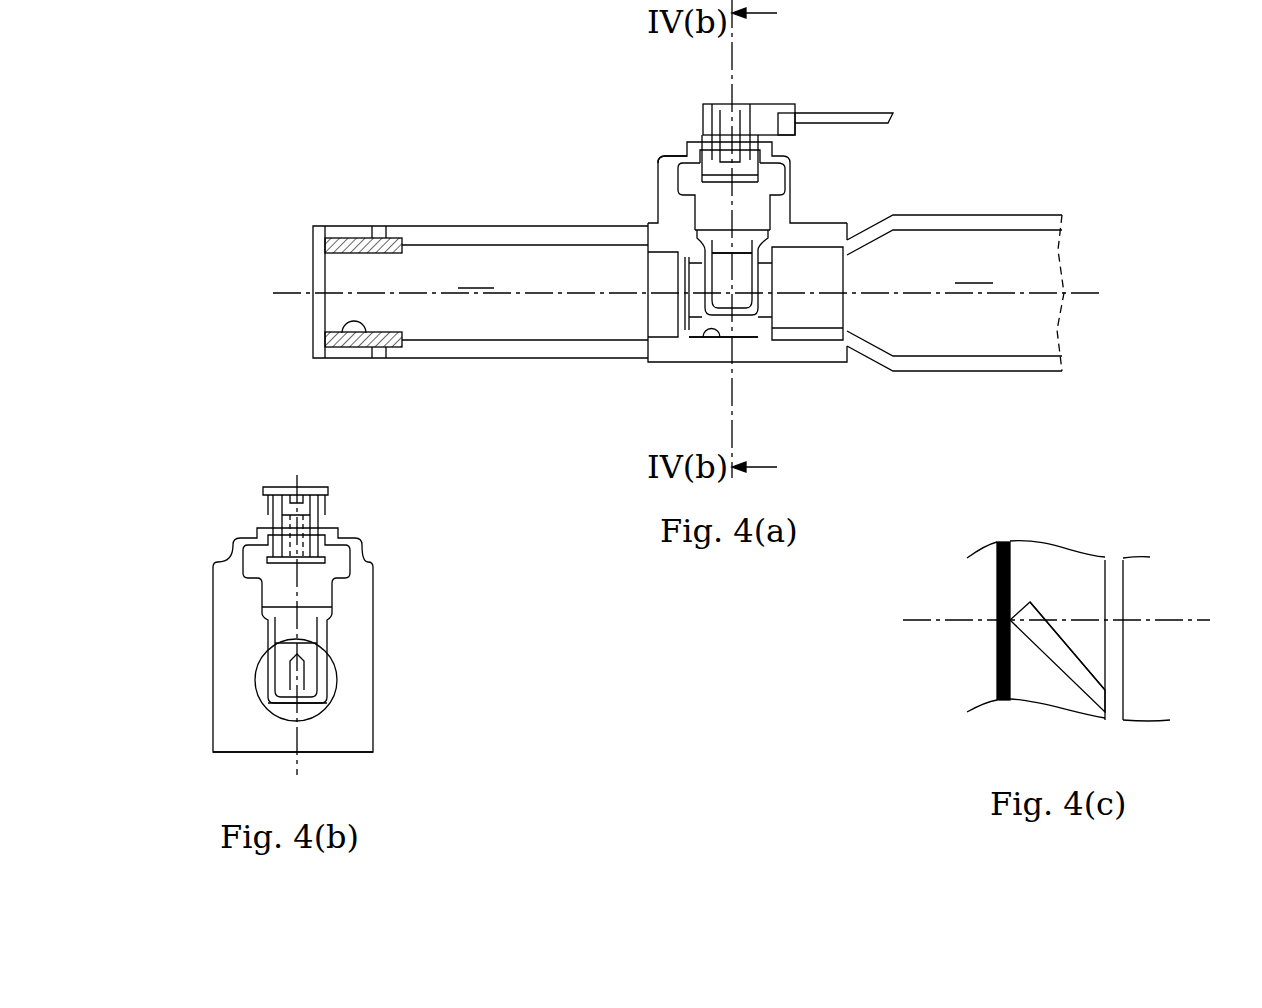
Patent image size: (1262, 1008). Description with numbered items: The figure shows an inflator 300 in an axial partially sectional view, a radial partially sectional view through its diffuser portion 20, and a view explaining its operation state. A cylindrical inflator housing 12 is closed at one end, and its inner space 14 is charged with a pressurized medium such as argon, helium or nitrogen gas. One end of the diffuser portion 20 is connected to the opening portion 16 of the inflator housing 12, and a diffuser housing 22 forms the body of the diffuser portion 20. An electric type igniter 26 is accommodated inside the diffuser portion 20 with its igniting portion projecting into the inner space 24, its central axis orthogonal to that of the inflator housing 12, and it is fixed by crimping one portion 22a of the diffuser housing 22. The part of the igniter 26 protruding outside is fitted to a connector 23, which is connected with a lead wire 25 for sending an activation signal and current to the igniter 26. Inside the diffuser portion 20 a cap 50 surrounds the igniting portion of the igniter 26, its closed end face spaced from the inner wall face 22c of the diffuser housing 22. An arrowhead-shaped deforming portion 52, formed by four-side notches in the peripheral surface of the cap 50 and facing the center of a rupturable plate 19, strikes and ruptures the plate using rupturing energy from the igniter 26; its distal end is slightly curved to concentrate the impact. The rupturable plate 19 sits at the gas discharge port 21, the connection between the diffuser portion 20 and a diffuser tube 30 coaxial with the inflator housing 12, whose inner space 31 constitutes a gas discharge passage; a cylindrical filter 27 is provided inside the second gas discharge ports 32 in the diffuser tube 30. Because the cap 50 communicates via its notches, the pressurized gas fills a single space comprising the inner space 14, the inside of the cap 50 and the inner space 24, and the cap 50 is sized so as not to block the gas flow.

In FIG. 4A, the inflator 300 is at (612, 165).
In FIG. 4A, the diffuser tube 30 is at (498, 226).
In FIG. 4A, the inner space 31 is at (476, 273).
In FIG. 4A, the second gas discharge ports 32 is at (382, 226).
In FIG. 4A, the filter 27 is at (337, 347).
In FIG. 4A, the diffuser portion 20 is at (680, 376).
In FIG. 4B, the diffuser portion 20 is at (392, 667).
In FIG. 4A, the diffuser housing 22 is at (783, 212).
In FIG. 4B, the diffuser housing 22 is at (225, 637).
In FIG. 4A, the crimped portion of diffuser housing 22a is at (673, 158).
In FIG. 4A, the inner wall face 22c is at (722, 335).
In FIG. 4A, the igniter 26 is at (752, 193).
In FIG. 4B, the igniter 26 is at (313, 600).
In FIG. 4A, the connector 23 is at (765, 108).
In FIG. 4A, the lead wire 25 is at (866, 116).
In FIG. 4A, the arrowhead-shaped deforming portion 52 is at (702, 253).
In FIG. 4B, the arrowhead-shaped deforming portion 52 is at (293, 678).
In FIG. 4C, the arrowhead-shaped deforming portion 52 is at (1040, 620).
In FIG. 4A, the rupturable plate 19 is at (690, 337).
In FIG. 4C, the rupturable plate 19 is at (997, 568).
In FIG. 4A, the gas discharge port 21 is at (660, 318).
In FIG. 4A, the inner space 24 is at (750, 340).
In FIG. 4B, the inner space 24 is at (312, 713).
In FIG. 4C, the inner space 24 is at (1033, 690).
In FIG. 4A, the cap 50 is at (757, 258).
In FIG. 4B, the cap 50 is at (322, 682).
In FIG. 4C, the cap 50 is at (1115, 668).
In FIG. 4A, the opening portion 16 is at (768, 310).
In FIG. 4A, the inflator housing 12 is at (1017, 215).
In FIG. 4A, the inner space 14 is at (974, 268).